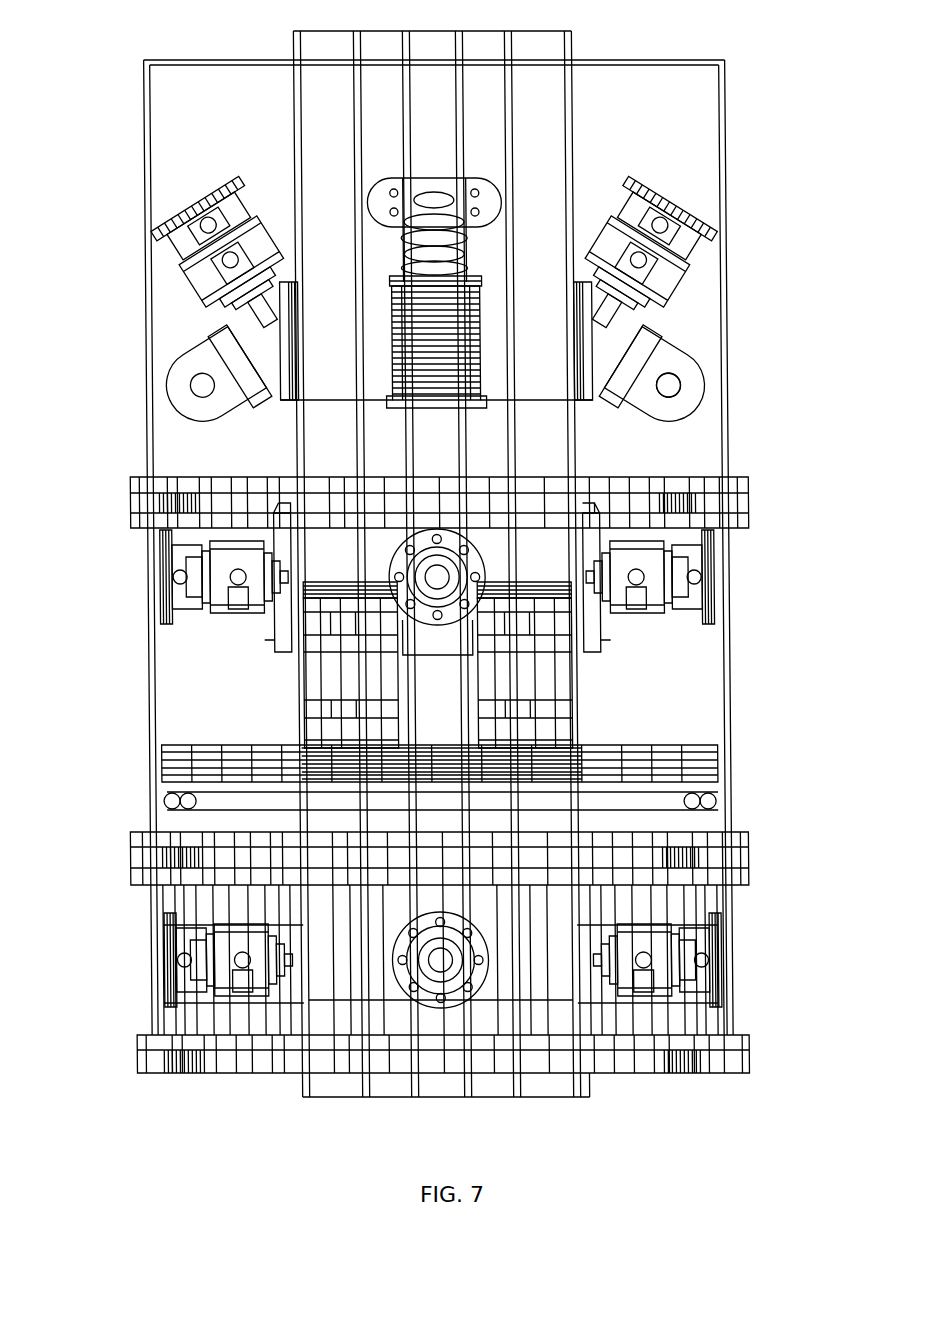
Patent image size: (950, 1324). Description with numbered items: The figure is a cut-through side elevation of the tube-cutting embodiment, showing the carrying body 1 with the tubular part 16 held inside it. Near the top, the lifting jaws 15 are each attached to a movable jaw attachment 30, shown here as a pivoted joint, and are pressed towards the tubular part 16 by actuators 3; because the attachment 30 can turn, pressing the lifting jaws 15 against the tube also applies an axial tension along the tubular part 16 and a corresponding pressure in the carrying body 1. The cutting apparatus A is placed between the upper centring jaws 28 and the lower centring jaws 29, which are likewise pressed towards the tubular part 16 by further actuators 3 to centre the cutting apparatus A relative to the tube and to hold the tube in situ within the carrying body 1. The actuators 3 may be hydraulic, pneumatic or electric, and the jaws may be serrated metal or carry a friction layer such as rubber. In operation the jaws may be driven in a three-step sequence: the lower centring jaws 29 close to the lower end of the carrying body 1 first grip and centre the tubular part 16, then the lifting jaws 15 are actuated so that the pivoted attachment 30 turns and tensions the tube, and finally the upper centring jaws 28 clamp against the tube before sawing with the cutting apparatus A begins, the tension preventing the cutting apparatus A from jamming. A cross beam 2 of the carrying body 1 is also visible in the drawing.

The carrying body 1 is at (729, 100).
The cross beam 2 is at (120, 505).
The actuator 3 is at (670, 277).
The lifting jaw 15 is at (590, 282).
The tubular part 16 is at (572, 162).
The upper centring jaw 28 is at (610, 645).
The lower centring jaw 29 is at (276, 1010).
The movable jaw attachment 30 is at (650, 340).
The cutting apparatus A is at (718, 765).